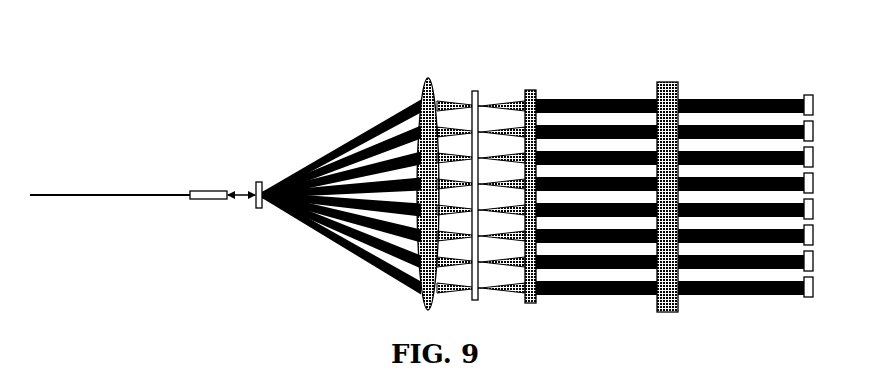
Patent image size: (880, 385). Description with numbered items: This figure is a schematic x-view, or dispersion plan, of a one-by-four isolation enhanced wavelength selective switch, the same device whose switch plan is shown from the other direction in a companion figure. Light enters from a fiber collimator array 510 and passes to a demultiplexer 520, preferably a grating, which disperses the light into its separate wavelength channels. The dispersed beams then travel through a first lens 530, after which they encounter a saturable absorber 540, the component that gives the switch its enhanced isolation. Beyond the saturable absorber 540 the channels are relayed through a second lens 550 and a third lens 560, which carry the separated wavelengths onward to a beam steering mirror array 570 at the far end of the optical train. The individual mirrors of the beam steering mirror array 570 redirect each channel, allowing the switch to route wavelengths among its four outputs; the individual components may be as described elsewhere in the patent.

The fiber collimator array 510 is at (205, 191).
The demultiplexer 520 is at (255, 180).
The lens 530 is at (422, 97).
The saturable absorber 540 is at (472, 93).
The lens 550 is at (530, 95).
The lens 560 is at (662, 80).
The beam steering mirror array 570 is at (808, 92).